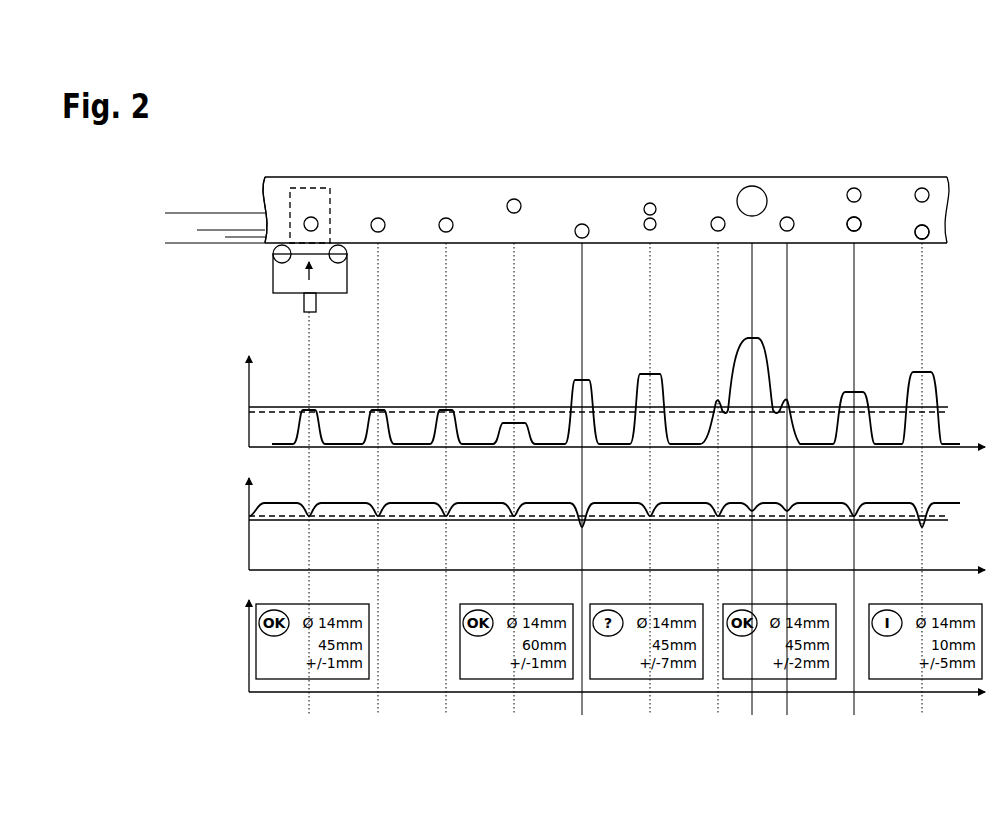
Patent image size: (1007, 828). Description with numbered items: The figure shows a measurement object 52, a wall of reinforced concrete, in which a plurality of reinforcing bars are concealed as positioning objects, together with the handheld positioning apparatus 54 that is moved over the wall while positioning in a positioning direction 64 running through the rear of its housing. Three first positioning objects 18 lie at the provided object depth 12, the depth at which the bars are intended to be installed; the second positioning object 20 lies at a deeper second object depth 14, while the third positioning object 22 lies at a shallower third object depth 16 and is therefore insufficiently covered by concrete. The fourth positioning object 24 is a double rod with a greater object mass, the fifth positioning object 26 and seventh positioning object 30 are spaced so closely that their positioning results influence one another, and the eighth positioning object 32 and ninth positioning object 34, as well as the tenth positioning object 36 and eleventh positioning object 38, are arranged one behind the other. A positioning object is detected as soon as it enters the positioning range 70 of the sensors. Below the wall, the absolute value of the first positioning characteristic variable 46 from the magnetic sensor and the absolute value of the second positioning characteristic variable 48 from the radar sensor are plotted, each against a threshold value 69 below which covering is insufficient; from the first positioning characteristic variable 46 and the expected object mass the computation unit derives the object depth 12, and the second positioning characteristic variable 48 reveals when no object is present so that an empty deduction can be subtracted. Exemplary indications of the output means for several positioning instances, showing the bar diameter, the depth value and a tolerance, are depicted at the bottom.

The provided object depth 12 is at (208, 197).
The second object depth 14 is at (175, 182).
The third object depth 16 is at (237, 205).
The first positioning object 18 is at (311, 217).
The second positioning object 20 is at (514, 199).
The third positioning object 22 is at (582, 224).
The fourth positioning object 24 is at (650, 203).
The fifth positioning object 26 is at (718, 217).
The seventh positioning object 30 is at (787, 217).
The eighth positioning object 32 is at (854, 188).
The ninth positioning object 34 is at (854, 224).
The tenth positioning object 36 is at (922, 188).
The eleventh positioning object 38 is at (922, 232).
The first positioning characteristic variable 46 is at (265, 433).
The second positioning characteristic variable 48 is at (278, 503).
The measurement object 52 is at (276, 213).
The handheld positioning apparatus 54 is at (262, 296).
The positioning direction 64 is at (318, 272).
The threshold value 69 is at (465, 406).
The positioning range 70 is at (333, 203).